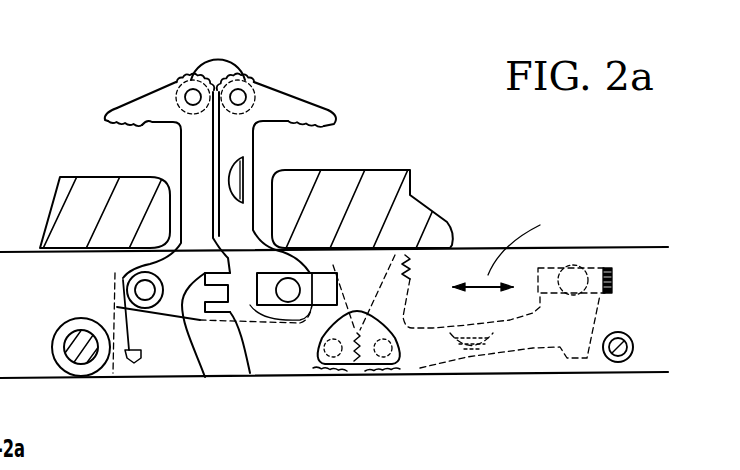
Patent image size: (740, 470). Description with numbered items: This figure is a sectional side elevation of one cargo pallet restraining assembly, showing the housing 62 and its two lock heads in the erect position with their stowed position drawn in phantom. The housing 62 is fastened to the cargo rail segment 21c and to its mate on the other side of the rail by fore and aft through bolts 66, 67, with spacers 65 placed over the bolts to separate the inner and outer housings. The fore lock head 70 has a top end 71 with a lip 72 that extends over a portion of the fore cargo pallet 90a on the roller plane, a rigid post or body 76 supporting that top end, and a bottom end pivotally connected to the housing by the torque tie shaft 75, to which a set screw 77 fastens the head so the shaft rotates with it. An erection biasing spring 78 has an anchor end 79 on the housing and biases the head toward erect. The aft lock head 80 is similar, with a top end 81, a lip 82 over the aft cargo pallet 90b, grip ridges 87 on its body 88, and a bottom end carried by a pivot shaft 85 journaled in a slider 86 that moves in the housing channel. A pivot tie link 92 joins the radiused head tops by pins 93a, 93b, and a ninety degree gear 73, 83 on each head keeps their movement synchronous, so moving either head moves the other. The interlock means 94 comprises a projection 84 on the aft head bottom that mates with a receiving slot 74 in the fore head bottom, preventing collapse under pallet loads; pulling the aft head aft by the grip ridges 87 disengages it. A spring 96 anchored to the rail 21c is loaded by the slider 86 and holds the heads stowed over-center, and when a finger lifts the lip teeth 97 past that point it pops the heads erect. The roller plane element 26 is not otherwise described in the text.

The cargo rail segment 21c is at (531, 240).
The guide rail 26 is at (485, 248).
The housing 62 is at (162, 395).
The spacer 65 is at (72, 376).
The fore through bolt 66 is at (330, 368).
The aft through bolt 67 is at (617, 363).
The fore lock head 70 is at (246, 147).
The top end of fore lock head 71 is at (100, 78).
The lip 72 is at (118, 107).
The ninety degree gear 73 is at (343, 368).
The receiving slot 74 is at (200, 357).
The torque tie shaft 75 is at (125, 275).
The rigid post or body 76 is at (187, 153).
The set screw 77 is at (117, 307).
The erection biasing spring 78 is at (118, 363).
The anchor end 79 is at (133, 365).
The aft lock head 80 is at (326, 80).
The top end of aft lock head 81 is at (342, 93).
The lip 82 is at (330, 110).
The ninety degree gear 83 is at (387, 366).
The projection 84 is at (250, 373).
The pivot shaft 85 is at (577, 264).
The slider 86 is at (602, 293).
The grip ridges 87 is at (243, 170).
The rigid post or body 88 is at (197, 140).
The fore cargo pallet 90a is at (55, 205).
The aft cargo pallet 90b is at (375, 178).
The pivot tie link 92 is at (218, 58).
The pin 93a is at (191, 96).
The pin 93b is at (242, 98).
The interlock means 94 is at (227, 352).
The spring 96 is at (613, 282).
The lip teeth 97 is at (140, 124).